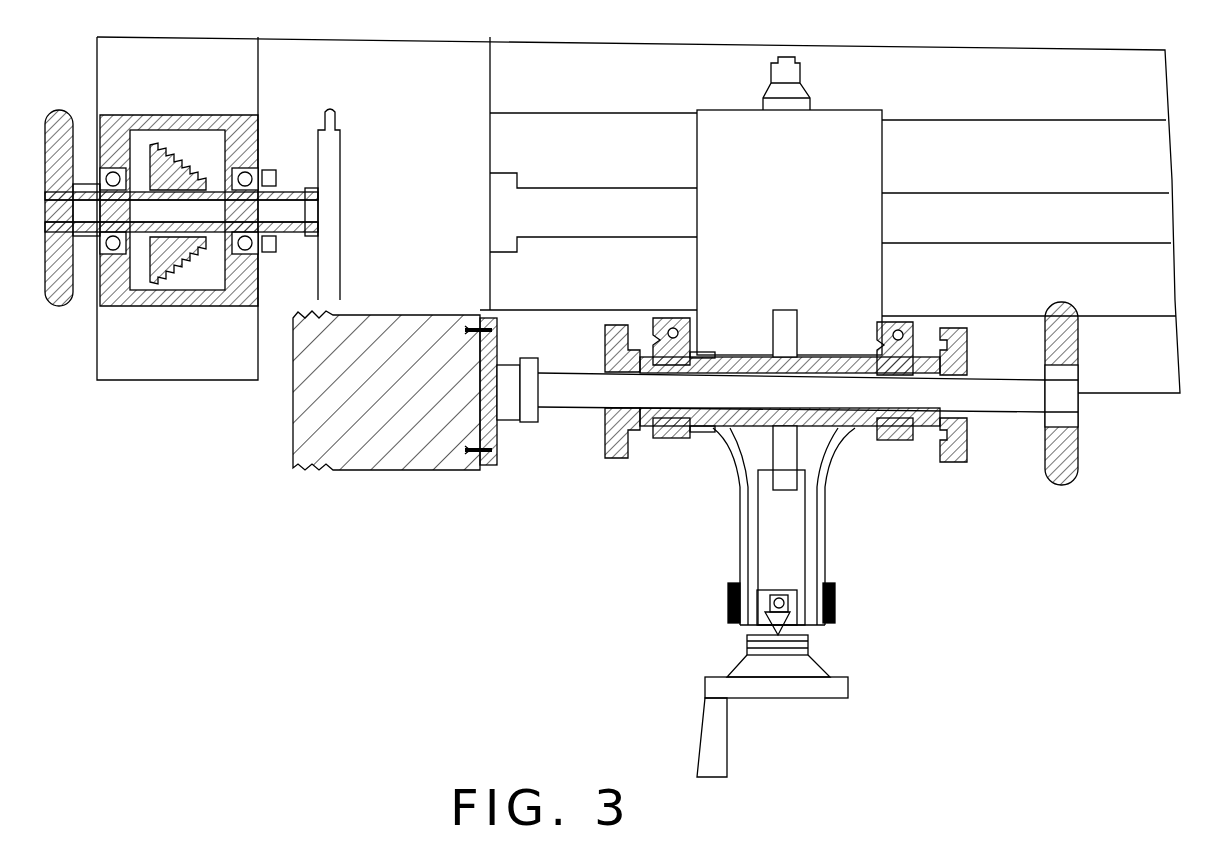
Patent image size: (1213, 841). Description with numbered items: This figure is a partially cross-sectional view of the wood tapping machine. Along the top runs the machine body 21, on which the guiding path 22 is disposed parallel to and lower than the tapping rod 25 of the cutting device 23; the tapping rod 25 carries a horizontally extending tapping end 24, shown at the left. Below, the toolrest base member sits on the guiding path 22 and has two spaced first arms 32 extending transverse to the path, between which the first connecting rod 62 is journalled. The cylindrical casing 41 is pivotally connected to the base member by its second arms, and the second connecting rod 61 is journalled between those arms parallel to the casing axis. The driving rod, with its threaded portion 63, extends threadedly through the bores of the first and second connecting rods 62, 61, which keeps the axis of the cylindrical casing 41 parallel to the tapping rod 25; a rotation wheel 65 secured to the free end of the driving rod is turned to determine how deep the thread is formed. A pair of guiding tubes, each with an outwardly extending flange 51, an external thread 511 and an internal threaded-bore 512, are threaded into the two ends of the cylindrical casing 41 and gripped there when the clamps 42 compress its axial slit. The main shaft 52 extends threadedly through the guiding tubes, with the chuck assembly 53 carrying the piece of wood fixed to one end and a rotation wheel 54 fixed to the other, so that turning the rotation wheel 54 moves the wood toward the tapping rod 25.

The machine frame 21 is at (688, 45).
The guiding path 22 is at (988, 150).
The cutting device 23 is at (212, 120).
The tapping end 24 is at (330, 158).
The tapping rod 25 is at (298, 215).
The first arms 32 is at (745, 562).
The cylindrical casing 41 is at (722, 430).
The clamps 42 is at (905, 335).
The flange 51 is at (605, 428).
The external thread 511 is at (640, 430).
The internal threaded-bore 512 is at (655, 430).
The main shaft 52 is at (780, 398).
The chuck assembly 53 is at (500, 435).
The rotation wheel 54 is at (1060, 482).
The second connecting rod 61 is at (810, 645).
The first connecting rod 62 is at (805, 580).
The threaded portion 63 is at (790, 455).
The rotation wheel 65 is at (840, 690).